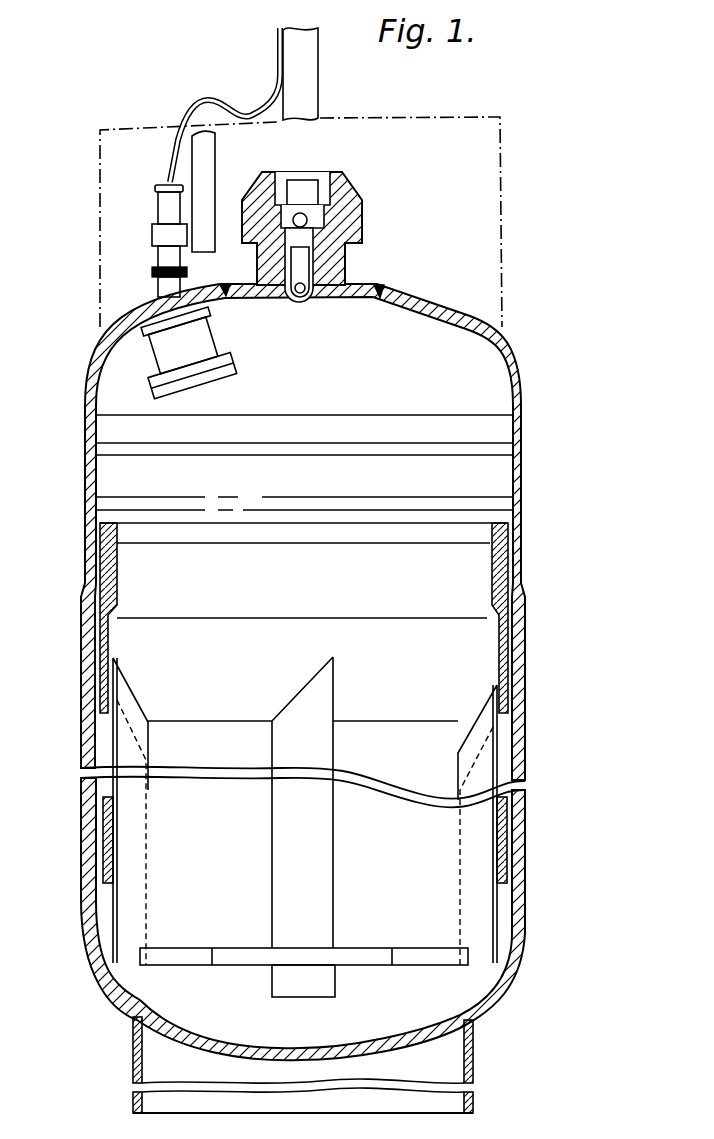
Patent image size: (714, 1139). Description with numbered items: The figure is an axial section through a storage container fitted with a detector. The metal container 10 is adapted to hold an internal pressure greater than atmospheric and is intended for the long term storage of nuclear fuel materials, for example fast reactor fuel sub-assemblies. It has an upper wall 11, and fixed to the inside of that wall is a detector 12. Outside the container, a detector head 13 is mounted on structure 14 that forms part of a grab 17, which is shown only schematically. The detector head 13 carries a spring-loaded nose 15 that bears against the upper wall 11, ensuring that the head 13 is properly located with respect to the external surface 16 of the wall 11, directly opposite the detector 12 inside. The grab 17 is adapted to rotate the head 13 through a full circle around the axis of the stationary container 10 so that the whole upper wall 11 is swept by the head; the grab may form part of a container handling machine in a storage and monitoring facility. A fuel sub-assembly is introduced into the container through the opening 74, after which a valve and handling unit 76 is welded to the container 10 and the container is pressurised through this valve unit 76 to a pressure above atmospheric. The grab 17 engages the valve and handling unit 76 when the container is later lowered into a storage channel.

The metal container 10 is at (532, 552).
The upper wall 11 is at (421, 294).
The detector 12 is at (168, 348).
The detector head 13 is at (158, 210).
The structure 14 is at (203, 160).
The spring-loaded nose 15 is at (155, 286).
The external surface 16 is at (466, 316).
The grab 17 is at (482, 158).
The opening 74 is at (380, 285).
The valve and handling unit 76 is at (347, 192).